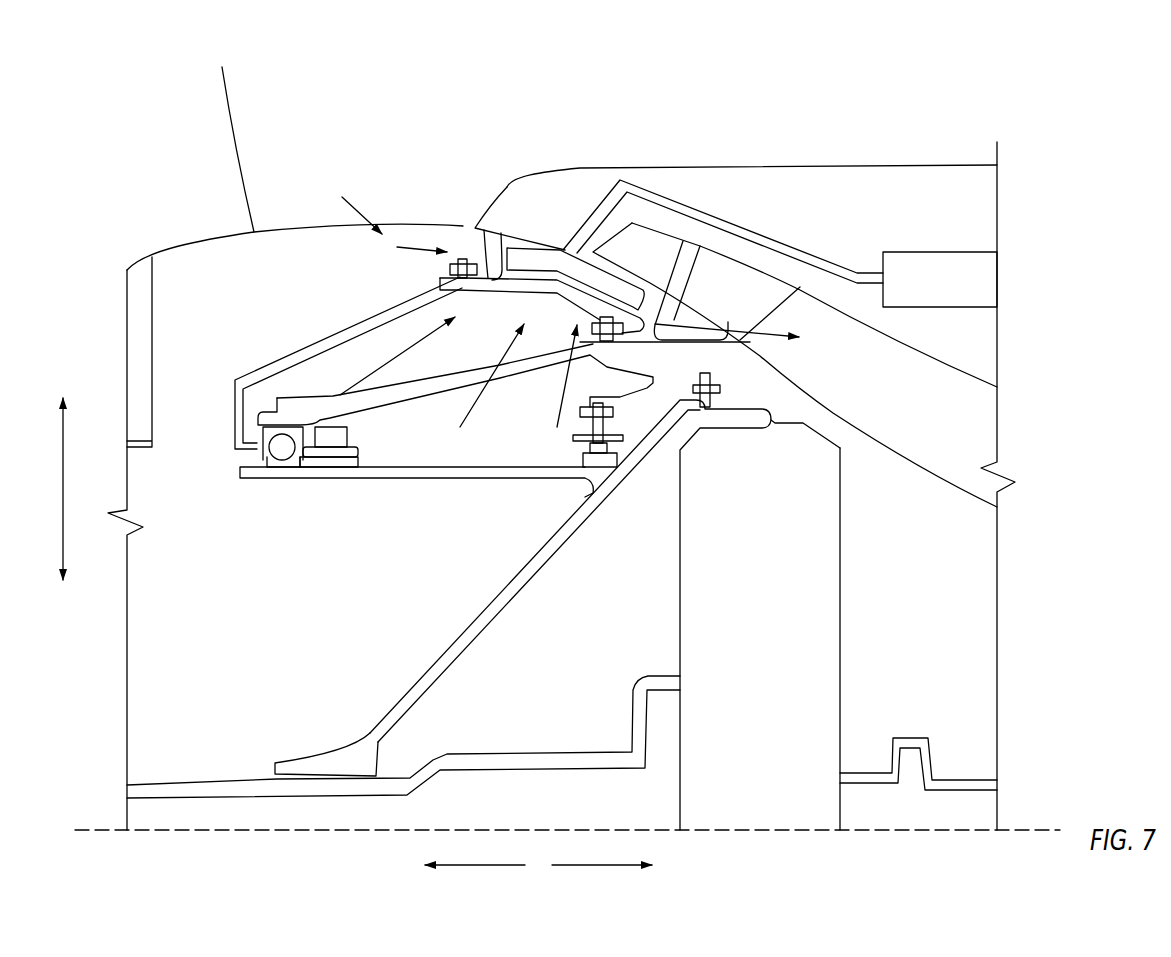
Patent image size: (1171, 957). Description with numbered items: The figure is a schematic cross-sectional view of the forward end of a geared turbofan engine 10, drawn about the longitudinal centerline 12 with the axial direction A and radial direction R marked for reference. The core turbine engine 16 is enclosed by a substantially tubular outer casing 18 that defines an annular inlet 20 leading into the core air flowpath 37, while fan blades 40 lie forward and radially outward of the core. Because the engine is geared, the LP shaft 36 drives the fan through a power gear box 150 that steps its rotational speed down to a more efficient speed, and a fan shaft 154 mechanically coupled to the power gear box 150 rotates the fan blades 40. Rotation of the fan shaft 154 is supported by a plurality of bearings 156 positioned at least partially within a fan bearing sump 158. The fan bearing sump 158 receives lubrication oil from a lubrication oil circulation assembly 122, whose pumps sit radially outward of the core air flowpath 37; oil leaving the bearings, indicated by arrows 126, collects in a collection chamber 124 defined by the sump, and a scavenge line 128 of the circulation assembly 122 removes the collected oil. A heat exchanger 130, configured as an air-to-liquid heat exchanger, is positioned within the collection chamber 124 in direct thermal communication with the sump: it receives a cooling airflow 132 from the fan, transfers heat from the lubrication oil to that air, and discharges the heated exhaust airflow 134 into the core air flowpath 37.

The turbofan engine 10 is at (415, 98).
The longitudinal centerline 12 is at (210, 830).
The core turbine engine 16 is at (939, 191).
The outer casing 18 is at (768, 163).
The annular inlet 20 is at (489, 195).
The LP shaft 36 is at (967, 790).
The core air flowpath 37 is at (867, 394).
The fan blades 40 is at (243, 144).
The lubrication oil circulation assembly 122 is at (929, 235).
The collection chamber 124 is at (518, 242).
The flow of lubrication oil 126 is at (478, 370).
The scavenge line 128 is at (640, 185).
The heat exchanger 130 is at (555, 243).
The cooling airflow 132 is at (410, 247).
The exhaust airflow 134 is at (739, 338).
The power gear box 150 is at (680, 527).
The fan shaft 154 is at (452, 632).
The bearings 156 is at (249, 457).
The fan bearing sump 158 is at (403, 328).